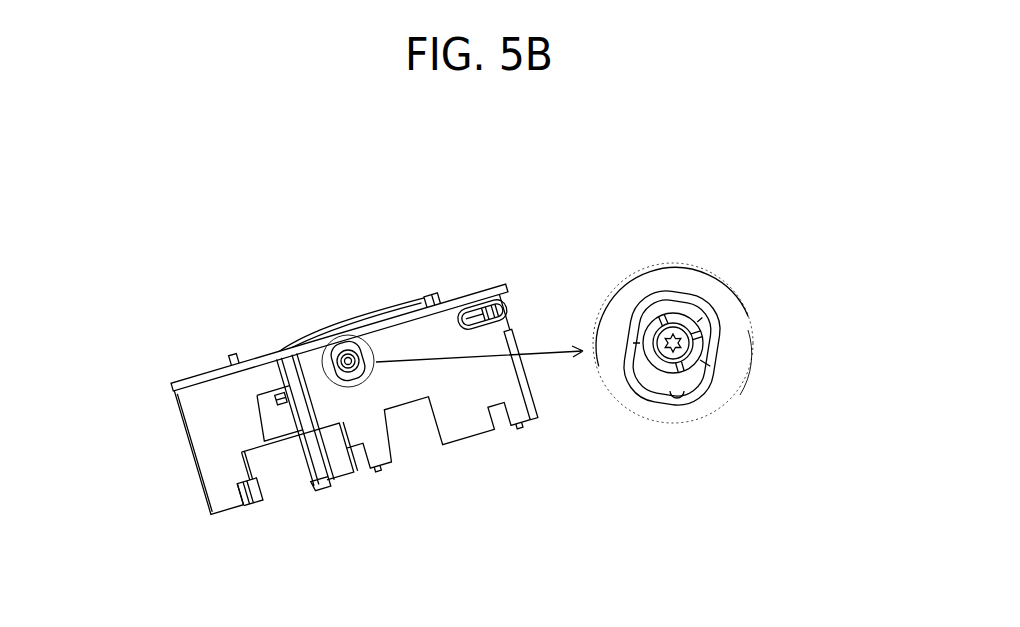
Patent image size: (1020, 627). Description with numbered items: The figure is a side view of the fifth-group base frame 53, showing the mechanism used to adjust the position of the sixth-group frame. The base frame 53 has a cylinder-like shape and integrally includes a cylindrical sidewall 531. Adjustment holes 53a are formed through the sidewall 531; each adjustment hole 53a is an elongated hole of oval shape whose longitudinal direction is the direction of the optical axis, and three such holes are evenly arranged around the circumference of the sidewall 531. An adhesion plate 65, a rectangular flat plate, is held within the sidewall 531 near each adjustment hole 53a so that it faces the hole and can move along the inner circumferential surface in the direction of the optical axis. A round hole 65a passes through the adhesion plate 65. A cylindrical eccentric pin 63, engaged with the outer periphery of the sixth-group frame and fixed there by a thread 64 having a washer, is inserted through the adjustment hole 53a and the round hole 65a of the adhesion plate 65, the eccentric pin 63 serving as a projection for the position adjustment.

The fifth-group base frame 53 is at (210, 413).
The cylindrical sidewall 531 is at (205, 487).
The adjustment hole 53a is at (668, 397).
The eccentric pin 63 is at (702, 365).
The thread 64 is at (706, 330).
The adhesion plate 65 is at (662, 302).
The round hole 65a is at (700, 328).